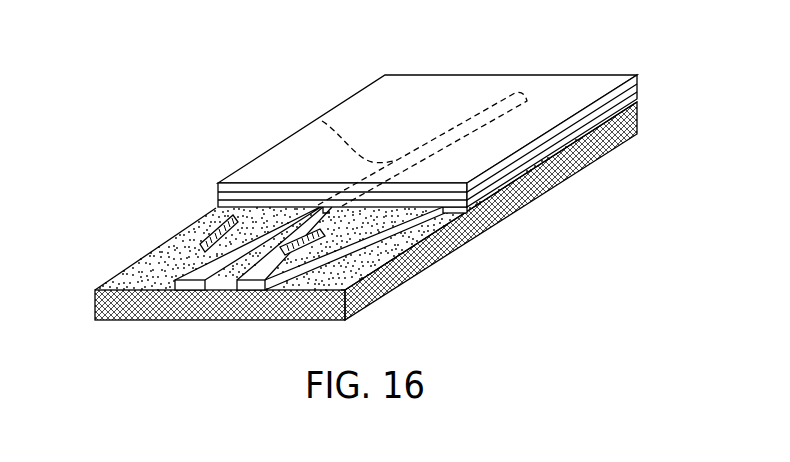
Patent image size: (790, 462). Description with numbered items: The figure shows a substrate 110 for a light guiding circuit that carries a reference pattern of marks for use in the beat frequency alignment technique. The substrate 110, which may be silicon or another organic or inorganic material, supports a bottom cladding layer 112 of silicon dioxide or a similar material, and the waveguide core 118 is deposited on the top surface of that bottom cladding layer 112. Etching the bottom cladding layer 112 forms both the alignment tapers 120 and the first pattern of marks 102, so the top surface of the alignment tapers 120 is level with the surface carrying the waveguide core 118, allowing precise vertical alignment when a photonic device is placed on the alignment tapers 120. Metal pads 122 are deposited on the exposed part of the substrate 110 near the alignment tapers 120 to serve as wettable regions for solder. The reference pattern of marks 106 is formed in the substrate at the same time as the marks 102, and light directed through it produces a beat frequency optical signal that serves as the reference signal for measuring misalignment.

The pattern of marks 102 is at (233, 213).
The reference pattern of marks 106 is at (386, 287).
The substrate 110 is at (547, 182).
The bottom cladding layer 112 is at (216, 207).
The waveguide core 118 is at (322, 121).
The alignment tapers 120 is at (192, 270).
The metal pads 122 is at (126, 281).